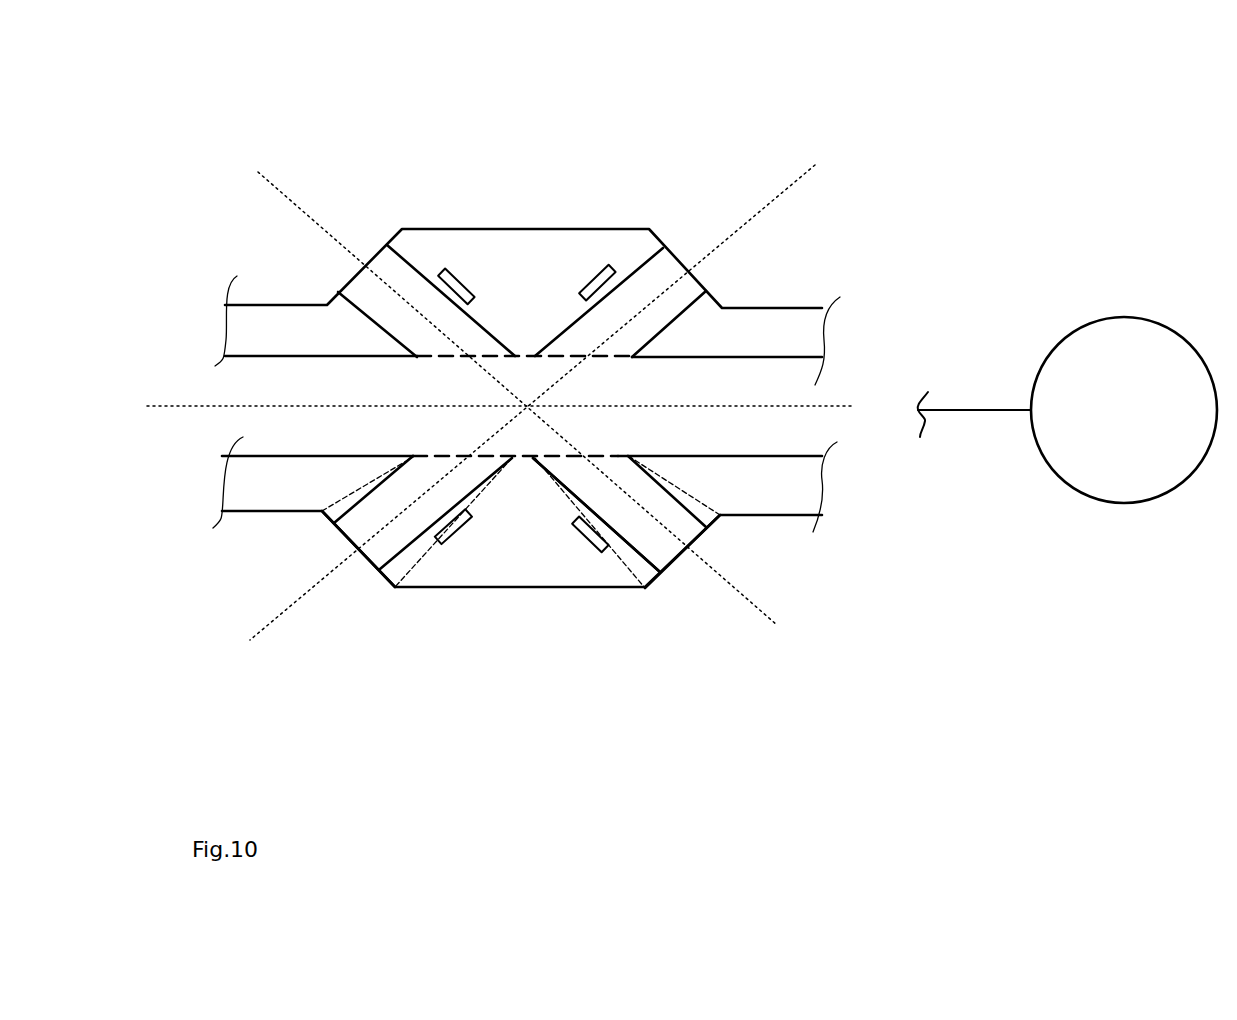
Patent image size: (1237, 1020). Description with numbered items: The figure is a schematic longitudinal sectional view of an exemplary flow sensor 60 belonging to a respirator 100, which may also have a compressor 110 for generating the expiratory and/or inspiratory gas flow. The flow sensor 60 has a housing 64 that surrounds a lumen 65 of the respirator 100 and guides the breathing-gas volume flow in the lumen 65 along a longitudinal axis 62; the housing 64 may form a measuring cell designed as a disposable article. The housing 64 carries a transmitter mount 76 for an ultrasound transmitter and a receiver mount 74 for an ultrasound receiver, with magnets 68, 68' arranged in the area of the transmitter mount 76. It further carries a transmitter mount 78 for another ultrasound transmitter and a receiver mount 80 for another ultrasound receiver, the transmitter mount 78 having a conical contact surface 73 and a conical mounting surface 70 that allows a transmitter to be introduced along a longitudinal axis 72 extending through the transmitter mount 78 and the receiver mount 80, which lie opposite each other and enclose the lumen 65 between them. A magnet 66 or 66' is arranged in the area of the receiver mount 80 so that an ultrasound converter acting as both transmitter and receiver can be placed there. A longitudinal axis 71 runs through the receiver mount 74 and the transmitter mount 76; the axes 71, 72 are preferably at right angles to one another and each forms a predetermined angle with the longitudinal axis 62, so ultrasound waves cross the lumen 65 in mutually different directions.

The flow sensor 60 is at (492, 663).
The longitudinal axis 62 is at (873, 410).
The housing 64 is at (700, 490).
The lumen 65 is at (993, 410).
The magnet 66 is at (485, 235).
The magnet 66' is at (604, 226).
The magnet 68 is at (475, 582).
The magnet 68' is at (602, 622).
The conical mounting surface 70 is at (633, 568).
The longitudinal axis 71 is at (737, 232).
The longitudinal axis 72 is at (743, 597).
The conical contact surface 73 is at (352, 494).
The receiver mount 74 is at (688, 287).
The transmitter mount 76 is at (383, 551).
The transmitter mount 78 is at (667, 553).
The receiver mount 80 is at (355, 298).
The respirator 100 is at (973, 196).
The compressor 110 is at (1105, 337).